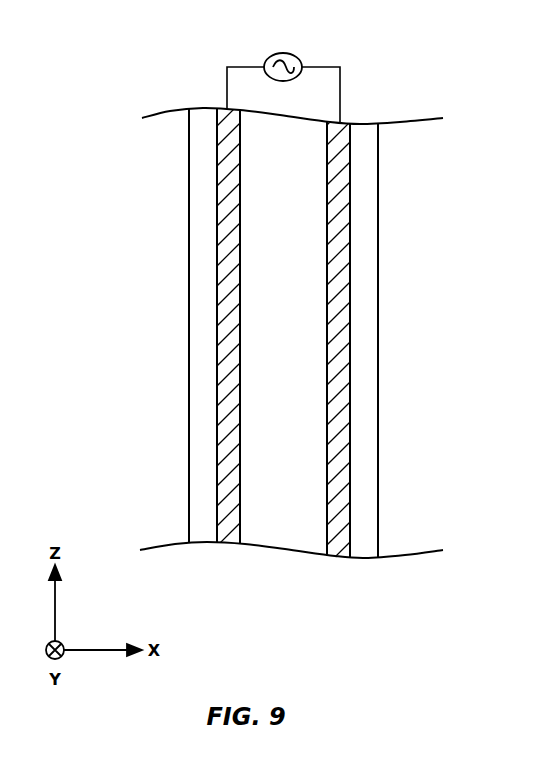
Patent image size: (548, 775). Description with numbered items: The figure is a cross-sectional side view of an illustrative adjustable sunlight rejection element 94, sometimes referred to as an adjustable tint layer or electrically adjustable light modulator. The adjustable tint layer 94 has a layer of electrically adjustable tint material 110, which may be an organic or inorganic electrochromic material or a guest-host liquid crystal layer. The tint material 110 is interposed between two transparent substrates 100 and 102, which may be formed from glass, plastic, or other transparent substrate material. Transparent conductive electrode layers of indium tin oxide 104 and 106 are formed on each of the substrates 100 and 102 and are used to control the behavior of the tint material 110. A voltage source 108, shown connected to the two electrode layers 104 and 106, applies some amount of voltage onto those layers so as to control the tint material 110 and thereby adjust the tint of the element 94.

The adjustable sunlight rejection element 94 is at (378, 568).
The transparent substrate 100 is at (195, 296).
The transparent substrate 102 is at (373, 296).
The indium tin oxide layer 104 is at (221, 110).
The indium tin oxide layer 106 is at (345, 127).
The voltage source 108 is at (260, 53).
The electrically adjustable tint material 110 is at (320, 512).